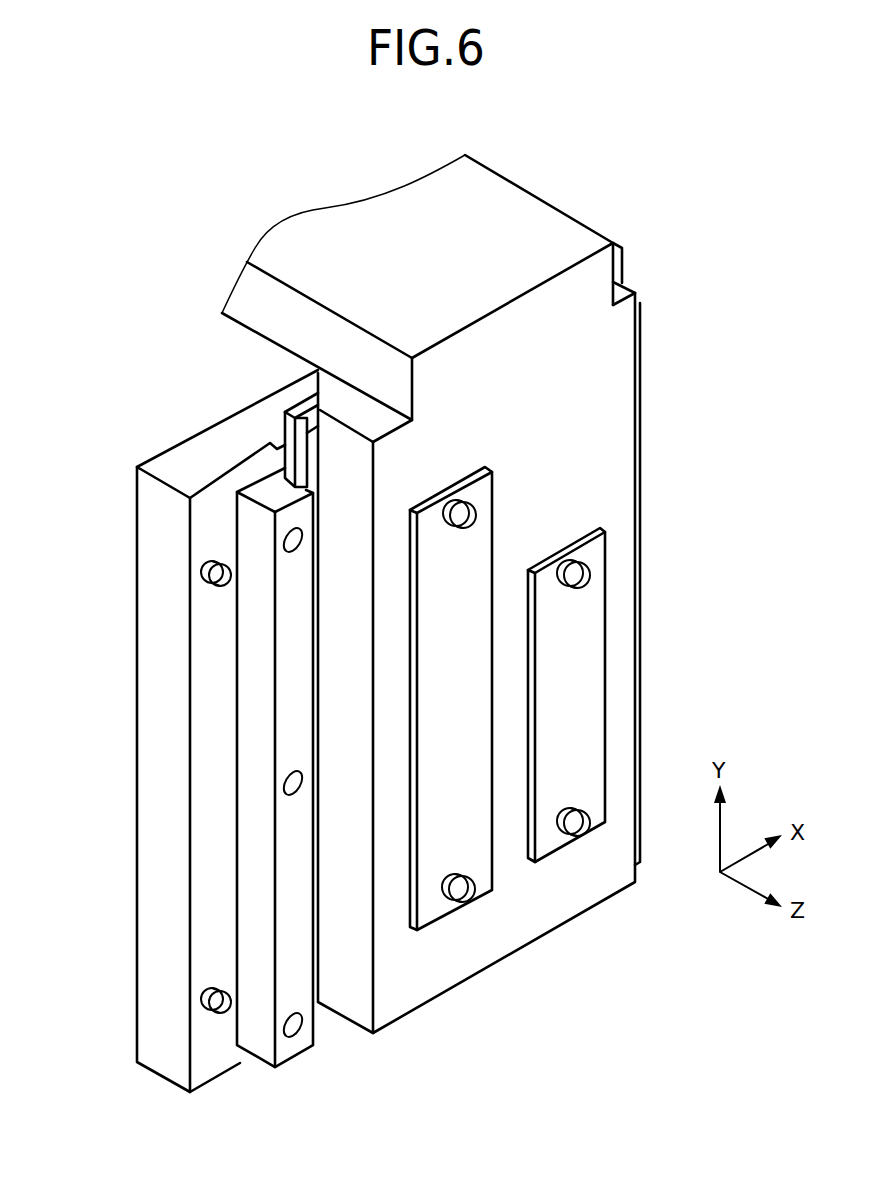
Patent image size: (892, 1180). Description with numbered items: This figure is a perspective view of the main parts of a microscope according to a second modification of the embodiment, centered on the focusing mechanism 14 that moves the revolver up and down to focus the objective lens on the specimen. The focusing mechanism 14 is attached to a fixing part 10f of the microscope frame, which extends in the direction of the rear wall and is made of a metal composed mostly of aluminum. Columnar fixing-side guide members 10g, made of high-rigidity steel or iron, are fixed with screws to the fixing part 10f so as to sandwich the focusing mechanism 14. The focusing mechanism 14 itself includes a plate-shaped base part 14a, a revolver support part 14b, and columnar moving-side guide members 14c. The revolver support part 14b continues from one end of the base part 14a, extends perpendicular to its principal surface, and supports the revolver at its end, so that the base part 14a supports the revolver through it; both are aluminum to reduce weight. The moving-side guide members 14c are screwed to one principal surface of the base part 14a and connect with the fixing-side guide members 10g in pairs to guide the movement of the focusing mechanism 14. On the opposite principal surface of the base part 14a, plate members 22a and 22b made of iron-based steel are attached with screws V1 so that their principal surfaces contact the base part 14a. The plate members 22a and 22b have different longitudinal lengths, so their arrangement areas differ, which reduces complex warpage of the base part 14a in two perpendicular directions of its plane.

The fixing part 10f is at (148, 998).
The fixing-side guide member 10g is at (288, 1053).
The focusing mechanism 14 is at (442, 587).
The base part 14a is at (618, 357).
The revolver support part 14b is at (512, 196).
The moving-side guide member 14c is at (312, 402).
The plate member 22a is at (483, 532).
The plate member 22b is at (562, 685).
The screw V1 is at (473, 512).